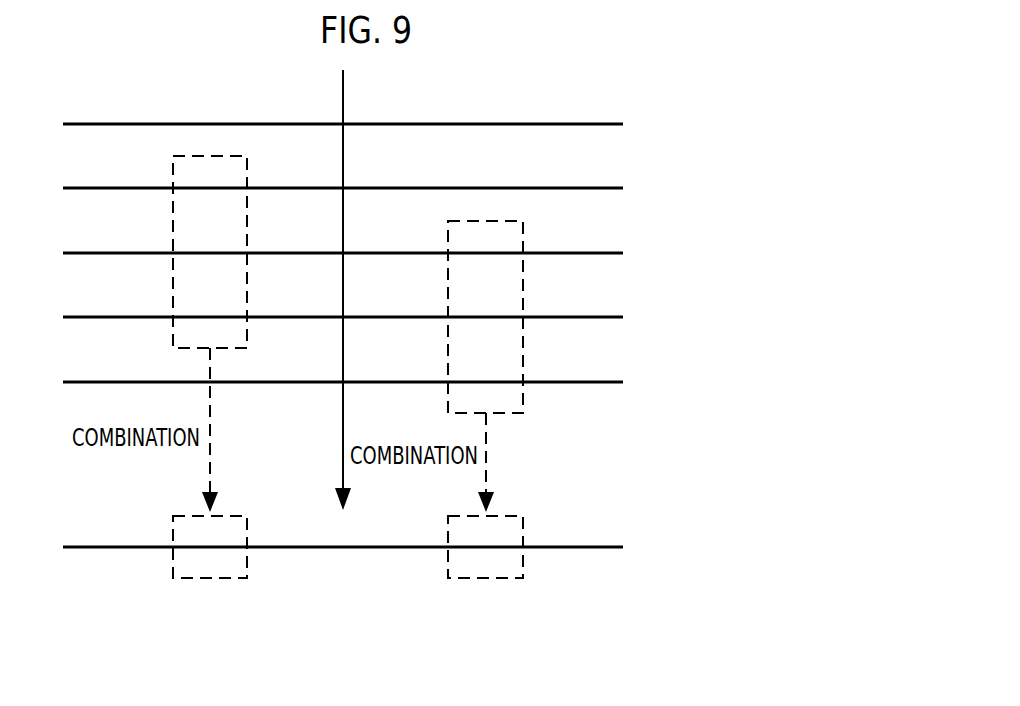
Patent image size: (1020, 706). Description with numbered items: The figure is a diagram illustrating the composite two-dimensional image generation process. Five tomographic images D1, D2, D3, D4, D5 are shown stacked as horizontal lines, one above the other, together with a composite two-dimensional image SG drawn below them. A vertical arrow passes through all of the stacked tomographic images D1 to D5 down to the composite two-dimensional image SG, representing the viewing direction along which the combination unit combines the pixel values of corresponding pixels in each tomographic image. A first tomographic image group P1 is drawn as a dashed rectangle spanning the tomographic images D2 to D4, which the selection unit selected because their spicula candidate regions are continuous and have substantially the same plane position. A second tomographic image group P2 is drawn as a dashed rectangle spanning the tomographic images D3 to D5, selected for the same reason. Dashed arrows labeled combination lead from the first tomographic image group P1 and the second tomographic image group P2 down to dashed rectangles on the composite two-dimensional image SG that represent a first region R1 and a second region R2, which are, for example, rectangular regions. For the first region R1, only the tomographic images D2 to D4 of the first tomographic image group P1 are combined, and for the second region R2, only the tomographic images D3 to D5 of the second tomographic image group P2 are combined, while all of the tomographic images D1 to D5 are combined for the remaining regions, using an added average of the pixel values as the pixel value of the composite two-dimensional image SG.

The tomographic image D1 is at (595, 124).
The tomographic image D2 is at (595, 188).
The tomographic image D3 is at (595, 253).
The tomographic image D4 is at (595, 317).
The tomographic image D5 is at (595, 382).
The composite two-dimensional image SG is at (595, 547).
The first tomographic image group P1 is at (209, 156).
The second tomographic image group P2 is at (484, 221).
The first region R1 is at (210, 589).
The second region R2 is at (485, 589).